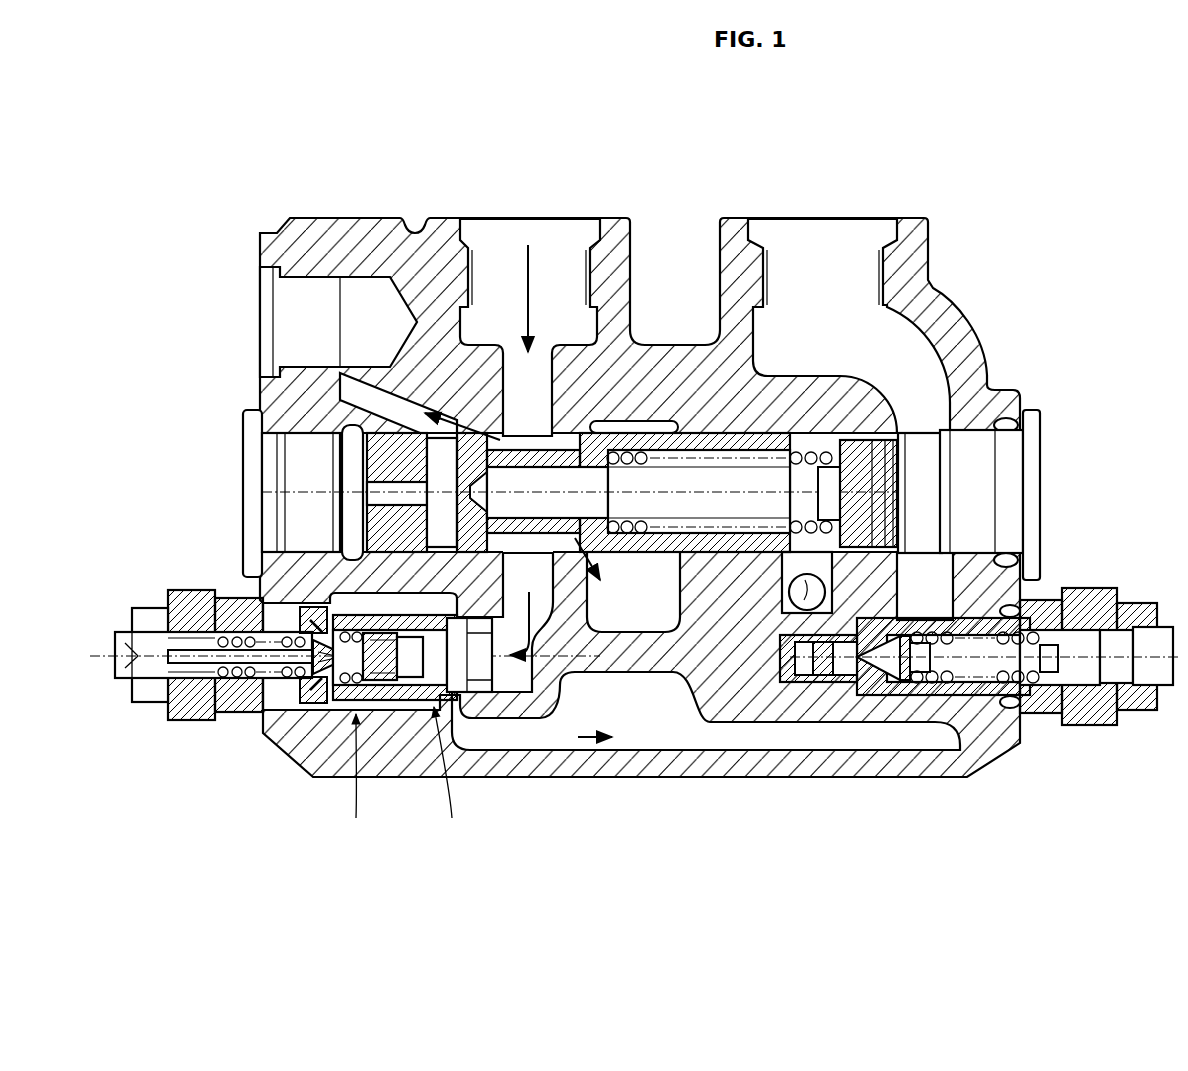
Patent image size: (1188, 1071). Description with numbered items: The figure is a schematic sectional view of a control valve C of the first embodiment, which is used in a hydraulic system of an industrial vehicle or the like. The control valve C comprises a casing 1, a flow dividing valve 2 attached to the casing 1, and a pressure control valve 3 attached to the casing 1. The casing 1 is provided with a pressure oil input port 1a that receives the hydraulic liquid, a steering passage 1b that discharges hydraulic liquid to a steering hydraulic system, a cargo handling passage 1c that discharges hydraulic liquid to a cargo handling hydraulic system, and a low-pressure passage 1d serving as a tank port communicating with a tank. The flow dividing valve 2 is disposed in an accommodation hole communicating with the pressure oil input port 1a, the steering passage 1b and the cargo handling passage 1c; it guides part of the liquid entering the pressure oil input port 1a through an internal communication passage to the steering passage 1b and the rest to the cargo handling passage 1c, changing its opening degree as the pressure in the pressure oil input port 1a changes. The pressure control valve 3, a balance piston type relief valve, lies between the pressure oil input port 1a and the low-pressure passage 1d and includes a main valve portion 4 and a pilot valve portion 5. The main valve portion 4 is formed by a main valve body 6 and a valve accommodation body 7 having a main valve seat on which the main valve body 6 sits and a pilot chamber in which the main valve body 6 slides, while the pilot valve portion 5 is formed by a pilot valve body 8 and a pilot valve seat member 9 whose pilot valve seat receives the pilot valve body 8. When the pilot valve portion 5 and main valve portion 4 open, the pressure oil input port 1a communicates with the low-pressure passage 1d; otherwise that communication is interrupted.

The casing 1 is at (287, 252).
The pressure oil input port 1a is at (557, 276).
The steering passage 1b is at (812, 592).
The cargo handling passage 1c is at (638, 607).
The low-pressure passage 1d is at (826, 278).
The flow dividing valve 2 is at (390, 465).
The pressure control valve 3 is at (165, 732).
The main valve portion 4 is at (463, 728).
The pilot valve portion 5 is at (322, 680).
The main valve body 6 is at (400, 702).
The valve accommodation body 7 is at (395, 726).
The pilot valve body 8 is at (313, 695).
The pilot valve seat member 9 is at (336, 700).
The control valve C is at (1012, 320).